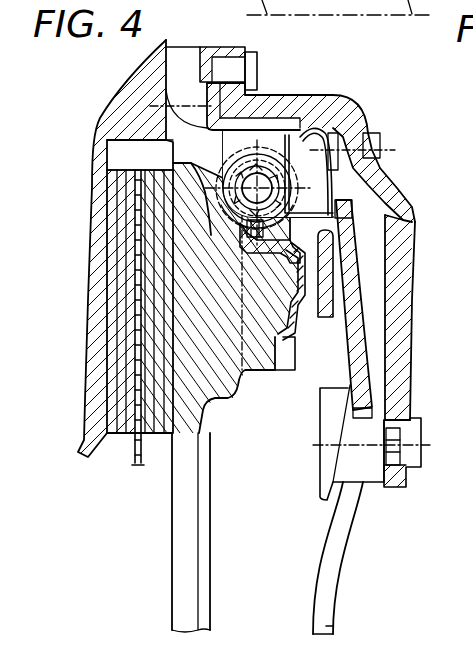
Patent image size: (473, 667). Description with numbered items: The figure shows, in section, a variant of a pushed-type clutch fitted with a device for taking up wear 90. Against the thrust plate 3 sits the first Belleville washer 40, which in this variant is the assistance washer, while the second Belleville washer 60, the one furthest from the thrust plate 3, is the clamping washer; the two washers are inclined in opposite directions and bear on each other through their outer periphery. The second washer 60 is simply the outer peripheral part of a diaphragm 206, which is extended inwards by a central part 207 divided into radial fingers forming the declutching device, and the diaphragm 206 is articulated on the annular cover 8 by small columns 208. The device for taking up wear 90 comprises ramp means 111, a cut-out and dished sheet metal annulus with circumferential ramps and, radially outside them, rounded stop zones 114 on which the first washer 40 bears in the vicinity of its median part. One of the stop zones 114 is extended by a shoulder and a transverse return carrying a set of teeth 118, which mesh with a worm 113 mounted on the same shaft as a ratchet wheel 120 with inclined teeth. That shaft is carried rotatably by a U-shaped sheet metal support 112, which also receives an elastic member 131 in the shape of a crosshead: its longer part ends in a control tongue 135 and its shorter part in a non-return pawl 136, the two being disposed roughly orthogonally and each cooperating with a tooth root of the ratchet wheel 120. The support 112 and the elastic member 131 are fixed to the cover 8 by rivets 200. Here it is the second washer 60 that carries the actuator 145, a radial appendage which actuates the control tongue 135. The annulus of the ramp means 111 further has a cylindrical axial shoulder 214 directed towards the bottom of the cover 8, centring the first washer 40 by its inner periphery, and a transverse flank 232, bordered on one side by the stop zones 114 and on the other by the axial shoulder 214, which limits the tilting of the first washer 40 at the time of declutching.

The thrust plate 3 is at (219, 400).
The cover 8 is at (388, 172).
The first Belleville washer 40 is at (352, 279).
The second Belleville washer 60 is at (357, 343).
The device for taking up wear 90 is at (197, 131).
The ramp means 111 is at (284, 365).
The support 112 is at (258, 71).
The worm 113 is at (168, 169).
The stop zones 114 is at (312, 277).
The set of teeth 118 is at (246, 236).
The ratchet wheel 120 is at (236, 170).
The elastic member 131 is at (323, 131).
The control tongue 135 is at (393, 177).
The non-return pawl 136 is at (302, 128).
The actuator 145 is at (350, 207).
The rivets 200 is at (258, 64).
The diaphragm 206 is at (343, 553).
The central part 207 is at (333, 628).
The small columns 208 is at (419, 475).
The cylindrical axial shoulder 214 is at (318, 336).
The transverse flank 232 is at (311, 300).